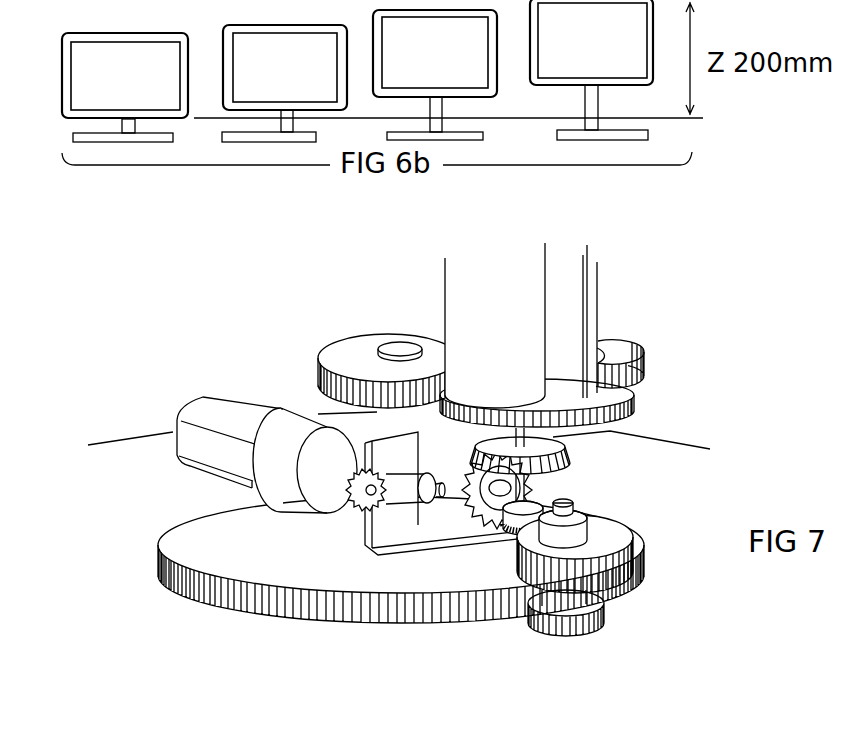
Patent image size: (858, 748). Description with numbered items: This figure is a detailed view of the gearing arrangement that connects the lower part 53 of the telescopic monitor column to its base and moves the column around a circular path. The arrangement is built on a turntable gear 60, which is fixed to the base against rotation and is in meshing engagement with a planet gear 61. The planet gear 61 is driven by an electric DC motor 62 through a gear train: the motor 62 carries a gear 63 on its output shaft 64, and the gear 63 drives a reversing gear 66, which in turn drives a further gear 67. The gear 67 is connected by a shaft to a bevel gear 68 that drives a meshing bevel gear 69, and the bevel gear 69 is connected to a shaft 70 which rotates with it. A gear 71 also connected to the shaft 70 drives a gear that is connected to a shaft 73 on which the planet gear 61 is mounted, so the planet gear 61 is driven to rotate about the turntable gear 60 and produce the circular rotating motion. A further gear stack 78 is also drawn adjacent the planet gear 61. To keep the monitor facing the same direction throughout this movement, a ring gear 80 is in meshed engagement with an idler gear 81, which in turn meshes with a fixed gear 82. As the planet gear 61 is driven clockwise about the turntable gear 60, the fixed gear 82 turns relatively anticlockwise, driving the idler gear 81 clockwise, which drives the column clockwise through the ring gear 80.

The lower part 53 is at (600, 292).
The turntable gear 60 is at (300, 605).
The planet gear 61 is at (590, 613).
The electric DC motor 62 is at (218, 412).
The gear 63 is at (350, 500).
The output shaft 64 is at (283, 506).
The reversing gear 66 is at (388, 445).
The further gear 67 is at (450, 503).
The bevel gear 68 is at (453, 527).
The bevel gear 69 is at (557, 467).
The shaft 70 is at (525, 494).
The gear 71 is at (507, 540).
The shaft 73 is at (566, 512).
The spur gear 78 is at (633, 563).
The ring gear 80 is at (603, 396).
The idler gear 81 is at (616, 350).
The fixed gear 82 is at (350, 350).